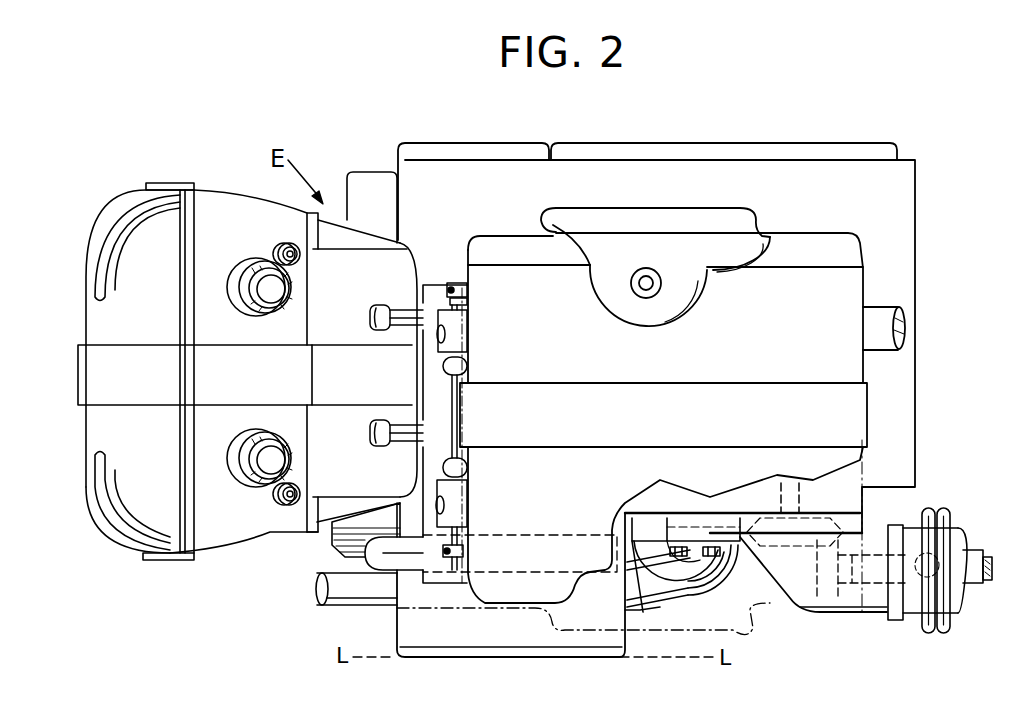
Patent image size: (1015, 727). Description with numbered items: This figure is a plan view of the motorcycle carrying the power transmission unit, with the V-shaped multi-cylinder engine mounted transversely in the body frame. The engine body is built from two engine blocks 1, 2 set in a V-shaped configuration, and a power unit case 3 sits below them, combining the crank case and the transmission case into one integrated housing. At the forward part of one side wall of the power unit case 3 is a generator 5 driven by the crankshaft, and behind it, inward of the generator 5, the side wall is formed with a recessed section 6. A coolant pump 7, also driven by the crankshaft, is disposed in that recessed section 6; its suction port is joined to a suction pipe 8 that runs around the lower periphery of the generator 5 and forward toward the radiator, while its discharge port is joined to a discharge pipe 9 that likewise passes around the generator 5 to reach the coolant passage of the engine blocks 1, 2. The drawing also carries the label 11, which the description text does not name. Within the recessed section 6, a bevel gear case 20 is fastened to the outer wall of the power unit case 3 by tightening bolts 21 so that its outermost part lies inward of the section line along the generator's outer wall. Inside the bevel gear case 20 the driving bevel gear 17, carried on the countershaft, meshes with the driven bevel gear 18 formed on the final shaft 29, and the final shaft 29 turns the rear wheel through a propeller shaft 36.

The engine block 1 is at (216, 333).
The engine block 2 is at (620, 489).
The power unit case 3 is at (915, 410).
The generator 5 is at (495, 632).
The recessed section 6 is at (753, 596).
The coolant pump 7 is at (673, 553).
The suction pipe 8 is at (630, 610).
The discharge pipe 9 is at (407, 316).
The nuts 11 is at (300, 257).
The driving bevel gear 17 is at (806, 512).
The driven bevel gear 18 is at (825, 567).
The bevel gear case 20 is at (800, 597).
The tightening bolts 21 is at (700, 590).
The final shaft 29 is at (862, 535).
The propeller shaft 36 is at (979, 558).